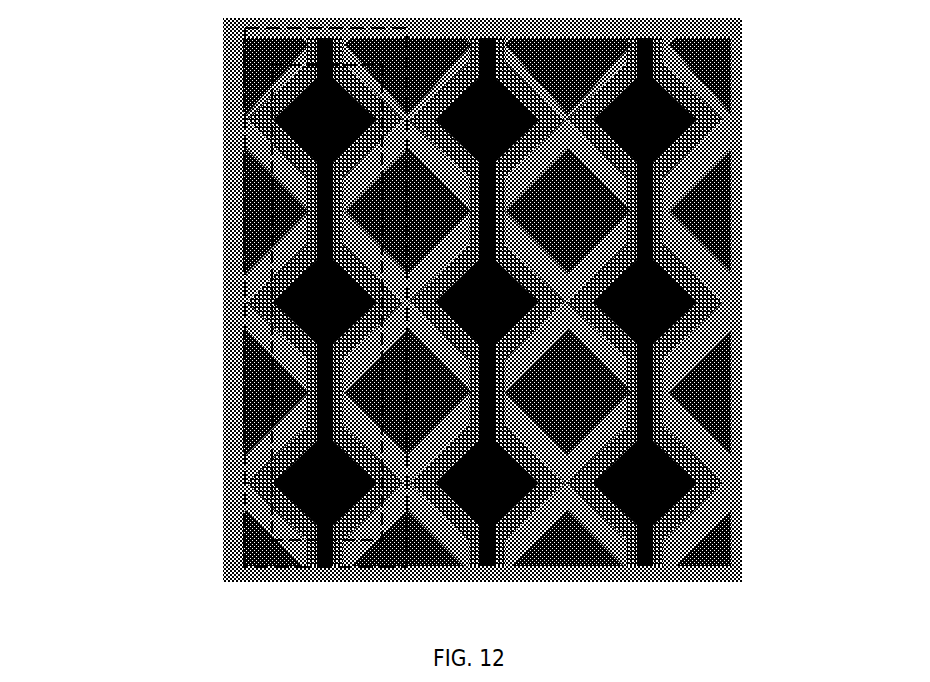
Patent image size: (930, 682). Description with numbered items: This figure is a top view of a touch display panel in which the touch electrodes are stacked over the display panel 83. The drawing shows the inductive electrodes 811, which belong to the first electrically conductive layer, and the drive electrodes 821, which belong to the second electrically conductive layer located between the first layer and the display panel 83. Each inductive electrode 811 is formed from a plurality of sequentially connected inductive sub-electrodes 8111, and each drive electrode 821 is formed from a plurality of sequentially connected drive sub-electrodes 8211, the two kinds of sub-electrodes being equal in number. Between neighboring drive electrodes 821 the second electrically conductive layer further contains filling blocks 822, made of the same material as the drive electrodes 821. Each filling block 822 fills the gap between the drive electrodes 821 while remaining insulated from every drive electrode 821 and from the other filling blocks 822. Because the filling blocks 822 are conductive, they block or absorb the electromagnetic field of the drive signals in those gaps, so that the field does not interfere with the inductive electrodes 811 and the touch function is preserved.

The display panel 83 is at (245, 45).
The drive electrode 821 is at (245, 145).
The inductive electrode 811 is at (243, 247).
The drive sub-electrode 8211 is at (723, 120).
The inductive sub-electrode 8111 is at (670, 298).
The filling block 822 is at (703, 388).